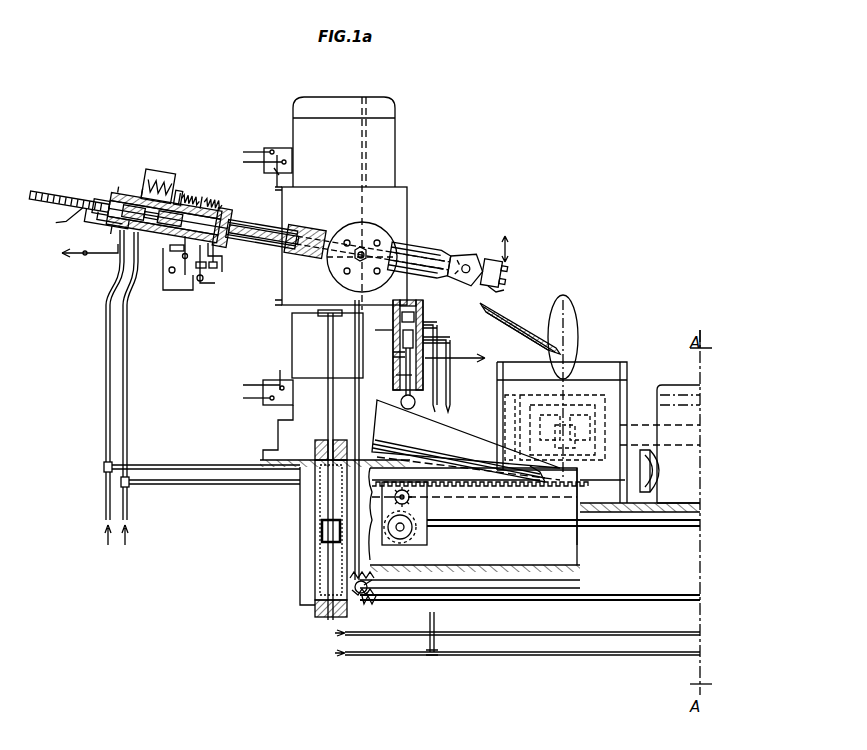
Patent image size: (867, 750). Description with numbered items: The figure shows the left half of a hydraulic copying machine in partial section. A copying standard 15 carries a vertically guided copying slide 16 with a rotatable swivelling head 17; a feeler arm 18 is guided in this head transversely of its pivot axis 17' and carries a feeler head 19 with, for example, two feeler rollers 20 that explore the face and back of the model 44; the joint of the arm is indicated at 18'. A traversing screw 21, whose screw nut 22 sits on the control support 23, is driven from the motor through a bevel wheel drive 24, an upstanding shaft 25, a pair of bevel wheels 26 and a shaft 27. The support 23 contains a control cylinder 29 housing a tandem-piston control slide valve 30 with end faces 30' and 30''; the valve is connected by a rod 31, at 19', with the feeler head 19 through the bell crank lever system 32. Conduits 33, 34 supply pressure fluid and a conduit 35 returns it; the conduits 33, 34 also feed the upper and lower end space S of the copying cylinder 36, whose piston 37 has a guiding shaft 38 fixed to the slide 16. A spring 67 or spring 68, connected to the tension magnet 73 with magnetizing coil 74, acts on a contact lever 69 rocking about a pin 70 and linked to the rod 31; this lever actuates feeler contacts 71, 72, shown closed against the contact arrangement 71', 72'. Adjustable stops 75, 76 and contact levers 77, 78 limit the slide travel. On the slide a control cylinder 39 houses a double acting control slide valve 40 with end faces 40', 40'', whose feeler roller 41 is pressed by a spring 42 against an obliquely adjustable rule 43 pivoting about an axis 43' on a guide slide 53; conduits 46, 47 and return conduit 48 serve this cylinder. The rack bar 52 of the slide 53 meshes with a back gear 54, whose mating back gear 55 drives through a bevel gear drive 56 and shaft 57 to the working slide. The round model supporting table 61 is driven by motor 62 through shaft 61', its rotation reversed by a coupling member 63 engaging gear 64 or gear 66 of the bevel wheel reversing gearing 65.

The copying standard 15 is at (390, 148).
The copying slide 16 is at (406, 200).
The swivelling head 17 is at (374, 242).
The pivot axis 17' is at (359, 244).
The feeler arm 18 is at (266, 222).
The universal joint 18' is at (468, 254).
The feeler head 19 is at (496, 261).
The connection point 19' is at (508, 231).
The feeler rollers 20 is at (500, 286).
The traversing screw 21 is at (60, 191).
The screw nut 22 is at (100, 188).
The control support 23 is at (130, 180).
The bevel wheel drive 24 is at (318, 210).
The upstanding shaft 25 is at (355, 340).
The pair of bevel wheels 26 is at (365, 600).
The shaft 27 is at (624, 596).
The control cylinder 29 is at (72, 214).
The control slide valve 30 is at (105, 231).
The left hand end face 30' is at (110, 193).
The right hand end face 30'' is at (147, 161).
The rod 31 is at (250, 205).
The lever system 32 is at (425, 312).
The conduit 33 is at (106, 312).
The conduit 34 is at (130, 312).
The return conduit 35 is at (84, 256).
The copying cylinder 36 is at (315, 568).
The piston 37 is at (322, 532).
The guiding shaft 38 is at (328, 415).
The control cylinder 39 is at (416, 320).
The control slide valve 40 is at (438, 368).
The lower end face 40' is at (388, 384).
The upper end face 40'' is at (385, 355).
The feeler roller 41 is at (398, 412).
The spring 42 is at (380, 331).
The rule 43 is at (468, 450).
The axis of rotation 43' is at (546, 465).
The model 44 is at (540, 310).
The conduit 46 is at (452, 408).
The conduit 47 is at (440, 400).
The return conduit 48 is at (460, 360).
The rack bar 52 is at (514, 488).
The guide slide 53 is at (420, 455).
The back gear 54 is at (410, 496).
The mating back gear 55 is at (440, 512).
The bevel gear drive 56 is at (414, 536).
The shaft 57 is at (618, 528).
The round model supporting table 61 is at (573, 419).
The shaft 61' is at (663, 433).
The motor 62 is at (655, 463).
The coupling member 63 is at (575, 445).
The gear 64 is at (605, 410).
The bevel wheel reversing gearing 65 is at (580, 400).
The gear 66 is at (512, 406).
The spring 67 is at (193, 191).
The spring 68 is at (217, 195).
The contact lever 69 is at (226, 194).
The pin 70 is at (215, 252).
The feeler contact 71 is at (183, 291).
The contact arrangement 71' is at (165, 276).
The feeler contact 72 is at (209, 285).
The contact arrangement 72' is at (233, 278).
The tension magnet 73 is at (177, 166).
The magnetizing coil 74 is at (157, 160).
The adjustable stop 75 is at (276, 148).
The adjustable stop 76 is at (280, 405).
The contact lever 77 is at (282, 180).
The contact lever 78 is at (280, 370).
The end space S is at (328, 498).